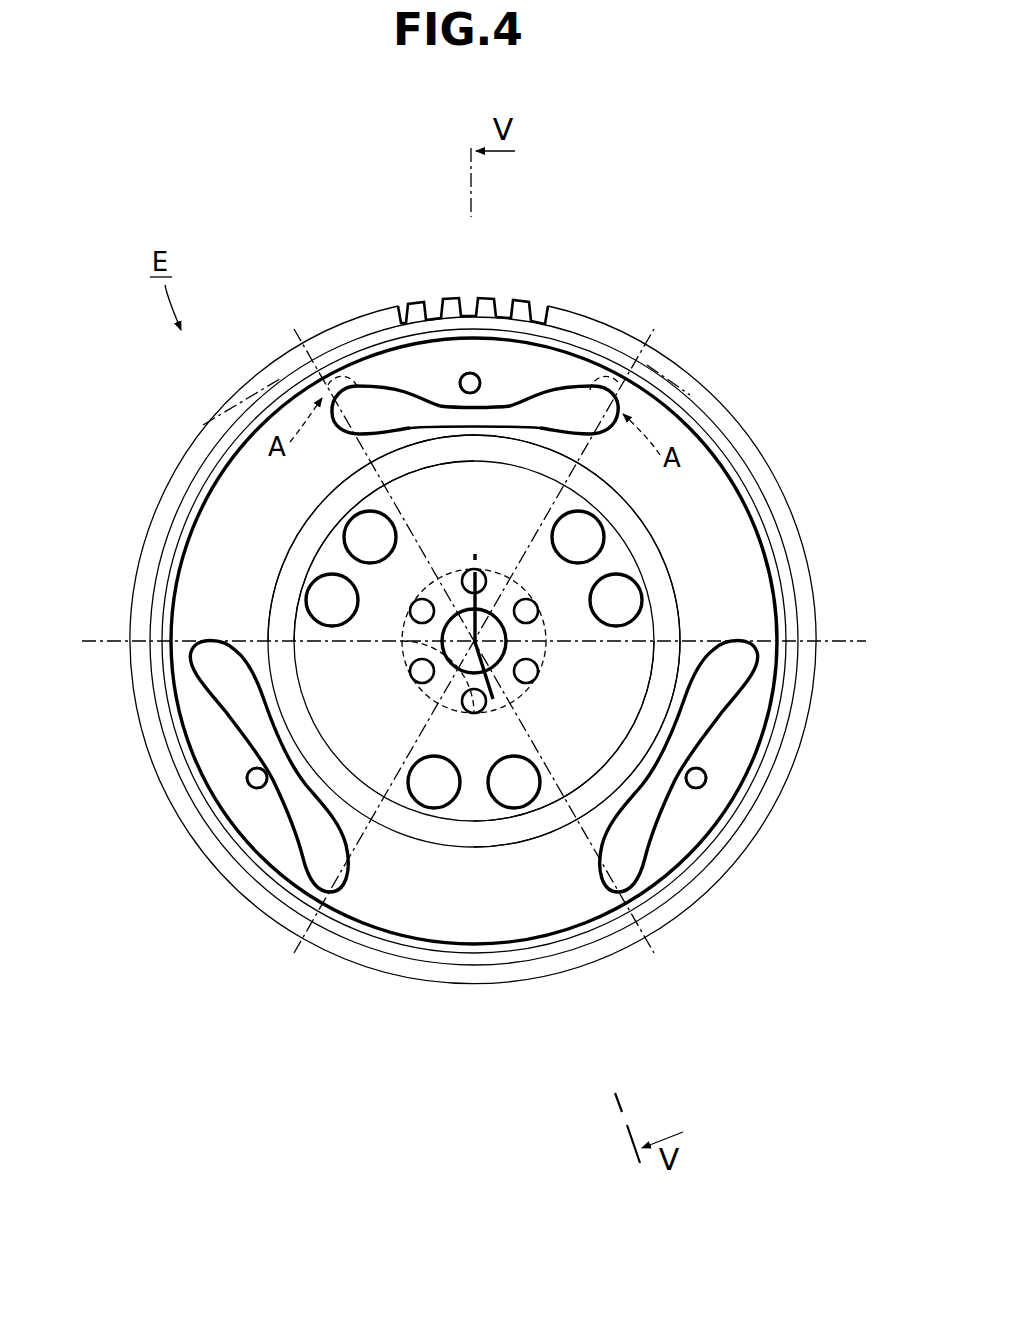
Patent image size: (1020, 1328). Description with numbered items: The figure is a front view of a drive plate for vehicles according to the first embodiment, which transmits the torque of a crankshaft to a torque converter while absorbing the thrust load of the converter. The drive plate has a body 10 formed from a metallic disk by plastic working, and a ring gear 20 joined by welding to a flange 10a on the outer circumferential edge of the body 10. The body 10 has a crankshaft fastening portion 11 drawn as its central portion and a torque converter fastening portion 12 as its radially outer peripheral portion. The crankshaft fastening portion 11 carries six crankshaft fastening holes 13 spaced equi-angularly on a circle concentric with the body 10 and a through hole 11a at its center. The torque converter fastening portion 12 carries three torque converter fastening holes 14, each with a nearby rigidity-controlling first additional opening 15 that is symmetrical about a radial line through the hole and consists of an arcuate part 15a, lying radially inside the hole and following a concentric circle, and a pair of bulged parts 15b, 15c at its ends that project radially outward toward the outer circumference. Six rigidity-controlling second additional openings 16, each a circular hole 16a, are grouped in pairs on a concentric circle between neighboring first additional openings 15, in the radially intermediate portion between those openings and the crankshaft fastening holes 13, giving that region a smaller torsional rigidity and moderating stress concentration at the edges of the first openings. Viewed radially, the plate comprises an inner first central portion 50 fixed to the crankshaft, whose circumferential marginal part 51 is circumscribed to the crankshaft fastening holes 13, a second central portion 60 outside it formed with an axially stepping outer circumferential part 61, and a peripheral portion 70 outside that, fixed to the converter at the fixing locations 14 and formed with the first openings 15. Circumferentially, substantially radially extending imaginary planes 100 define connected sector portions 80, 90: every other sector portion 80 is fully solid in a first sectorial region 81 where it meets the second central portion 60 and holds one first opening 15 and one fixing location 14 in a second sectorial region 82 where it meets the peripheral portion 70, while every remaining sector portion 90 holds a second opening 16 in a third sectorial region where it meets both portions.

The body 10 is at (643, 1020).
The flange 10a is at (578, 470).
The crankshaft fastening portion 11 is at (545, 795).
The through hole 11a is at (500, 641).
The torque converter fastening portion 12 is at (577, 902).
The crankshaft fastening holes 13 is at (482, 579).
The torque converter fastening holes 14 is at (462, 380).
The rigidity-controlling first additional openings 15 is at (420, 547).
The arcuate part 15a is at (440, 406).
The bulged part 15b is at (333, 400).
The bulged part 15c is at (583, 390).
The rigidity-controlling second additional openings 16 is at (571, 692).
The circular hole 16a is at (590, 535).
The ring gear 20 is at (494, 300).
The first central portion 50 is at (415, 692).
The circumferential marginal part 51 is at (418, 670).
The second central portion 60 is at (265, 614).
The axially stepping outer circumferential part 61 is at (272, 585).
The peripheral portion 70 is at (297, 862).
The sector portion 80 is at (545, 318).
The first sectorial region 81 is at (435, 513).
The second sectorial region 82 is at (490, 395).
The sector portion 90 is at (177, 465).
The imaginary planes 100 is at (283, 342).